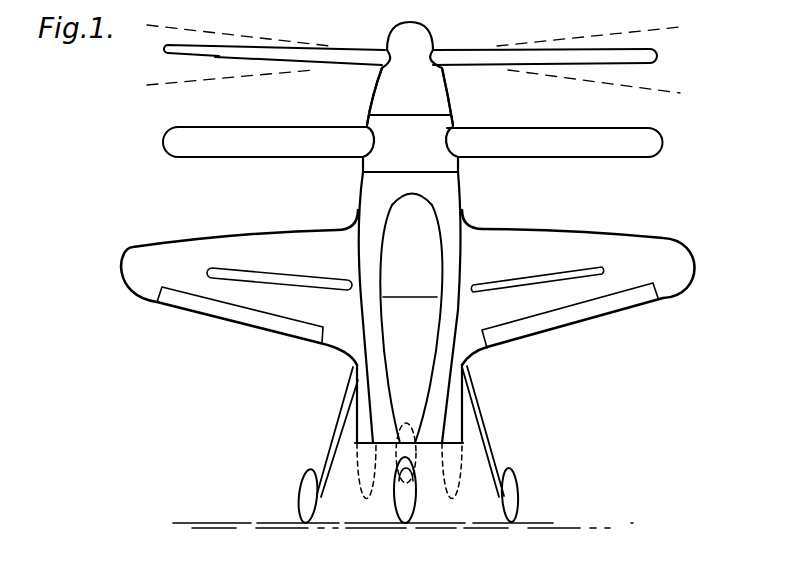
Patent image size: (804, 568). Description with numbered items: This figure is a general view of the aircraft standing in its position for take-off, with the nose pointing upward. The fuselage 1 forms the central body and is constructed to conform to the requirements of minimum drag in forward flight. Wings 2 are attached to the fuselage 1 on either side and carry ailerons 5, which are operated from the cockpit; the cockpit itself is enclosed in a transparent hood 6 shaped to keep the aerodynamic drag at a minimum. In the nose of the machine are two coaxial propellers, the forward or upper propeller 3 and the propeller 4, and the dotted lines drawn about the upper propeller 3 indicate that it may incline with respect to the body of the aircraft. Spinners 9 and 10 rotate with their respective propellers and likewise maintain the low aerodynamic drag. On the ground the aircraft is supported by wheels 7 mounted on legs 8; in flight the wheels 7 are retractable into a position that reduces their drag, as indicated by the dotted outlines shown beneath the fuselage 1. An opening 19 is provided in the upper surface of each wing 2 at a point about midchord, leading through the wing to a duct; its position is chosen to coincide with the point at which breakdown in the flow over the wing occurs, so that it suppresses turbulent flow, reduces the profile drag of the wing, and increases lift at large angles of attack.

The fuselage 1 is at (463, 202).
The wing 2 is at (282, 227).
The forward propeller 3 is at (492, 47).
The propeller 4 is at (497, 127).
The aileron 5 is at (265, 332).
The transparent hood 6 is at (436, 229).
The wheel 7 is at (302, 477).
The leg 8 is at (408, 431).
The spinner 9 is at (448, 91).
The spinner 10 is at (452, 118).
The opening 19 is at (279, 272).